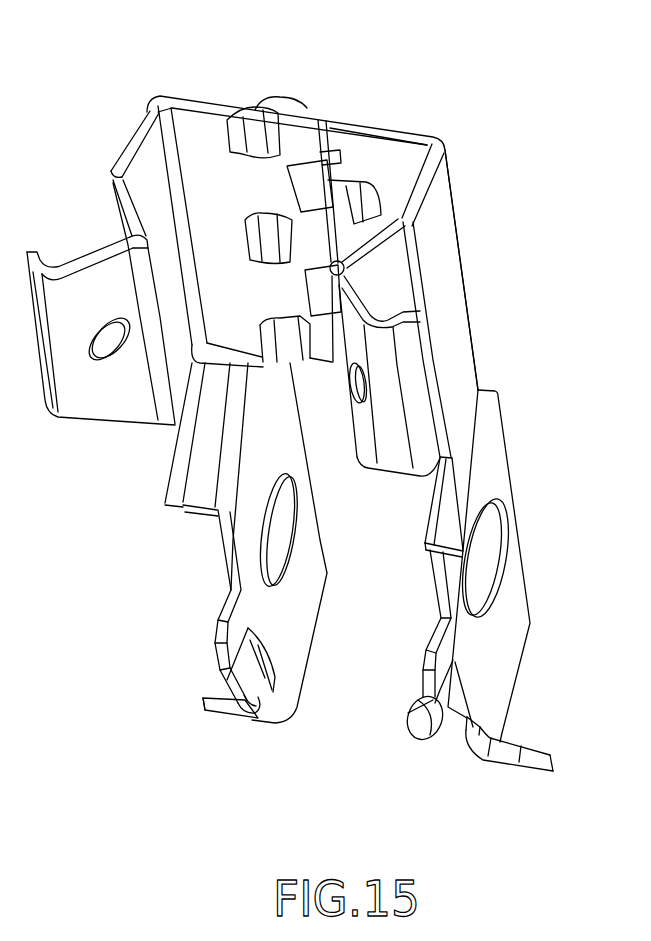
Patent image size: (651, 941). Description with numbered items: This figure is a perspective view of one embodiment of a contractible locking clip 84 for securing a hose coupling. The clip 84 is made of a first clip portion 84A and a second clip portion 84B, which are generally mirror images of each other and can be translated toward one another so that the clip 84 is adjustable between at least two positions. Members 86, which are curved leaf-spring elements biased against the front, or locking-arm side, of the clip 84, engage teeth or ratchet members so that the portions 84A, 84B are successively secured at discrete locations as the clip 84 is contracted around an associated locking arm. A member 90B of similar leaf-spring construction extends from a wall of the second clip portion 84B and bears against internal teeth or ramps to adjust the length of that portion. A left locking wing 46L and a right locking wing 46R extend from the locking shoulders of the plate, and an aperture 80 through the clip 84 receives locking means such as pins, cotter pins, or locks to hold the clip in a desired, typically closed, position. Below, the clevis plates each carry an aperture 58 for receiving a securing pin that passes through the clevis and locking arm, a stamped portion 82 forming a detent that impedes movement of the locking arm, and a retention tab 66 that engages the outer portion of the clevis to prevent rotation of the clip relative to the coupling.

The locking clip 84 is at (572, 420).
The first clip portion 84A is at (207, 98).
The second clip portion 84B is at (400, 153).
The members 86 is at (272, 238).
The left locking wing 46L is at (78, 266).
The right locking wing 46R is at (442, 233).
The aperture 80 is at (124, 356).
The member 90B is at (425, 408).
The aperture 58 is at (273, 527).
The stamped portion 82 is at (252, 720).
The retention tab 66 is at (228, 707).